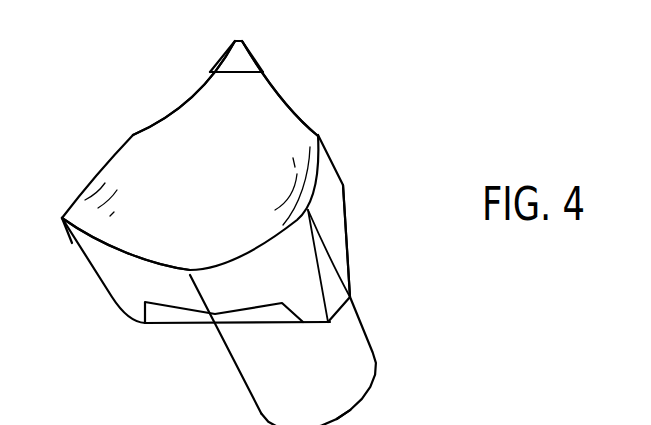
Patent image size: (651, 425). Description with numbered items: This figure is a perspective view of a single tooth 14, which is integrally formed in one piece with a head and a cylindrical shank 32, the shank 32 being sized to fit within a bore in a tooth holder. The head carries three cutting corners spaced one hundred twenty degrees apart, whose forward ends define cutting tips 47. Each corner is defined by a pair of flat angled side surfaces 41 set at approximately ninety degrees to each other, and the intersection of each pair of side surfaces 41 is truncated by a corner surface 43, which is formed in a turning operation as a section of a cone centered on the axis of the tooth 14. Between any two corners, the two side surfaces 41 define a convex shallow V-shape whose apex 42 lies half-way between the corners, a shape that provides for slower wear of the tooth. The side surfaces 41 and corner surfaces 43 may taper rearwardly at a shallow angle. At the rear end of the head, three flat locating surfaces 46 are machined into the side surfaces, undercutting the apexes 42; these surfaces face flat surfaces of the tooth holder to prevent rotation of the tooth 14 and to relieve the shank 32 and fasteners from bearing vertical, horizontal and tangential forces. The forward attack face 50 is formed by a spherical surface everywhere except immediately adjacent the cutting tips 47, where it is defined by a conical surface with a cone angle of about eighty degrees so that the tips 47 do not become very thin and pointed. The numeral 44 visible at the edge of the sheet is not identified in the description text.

The tooth 14 is at (98, 52).
The shank 32 is at (373, 349).
The side surfaces 41 is at (333, 188).
The apex 42 is at (133, 135).
The corner surface 43 is at (72, 243).
The shank end 44 is at (413, 417).
The flat locating surfaces 46 is at (163, 320).
The cutting tips 47 is at (256, 53).
The attack face 50 is at (207, 124).